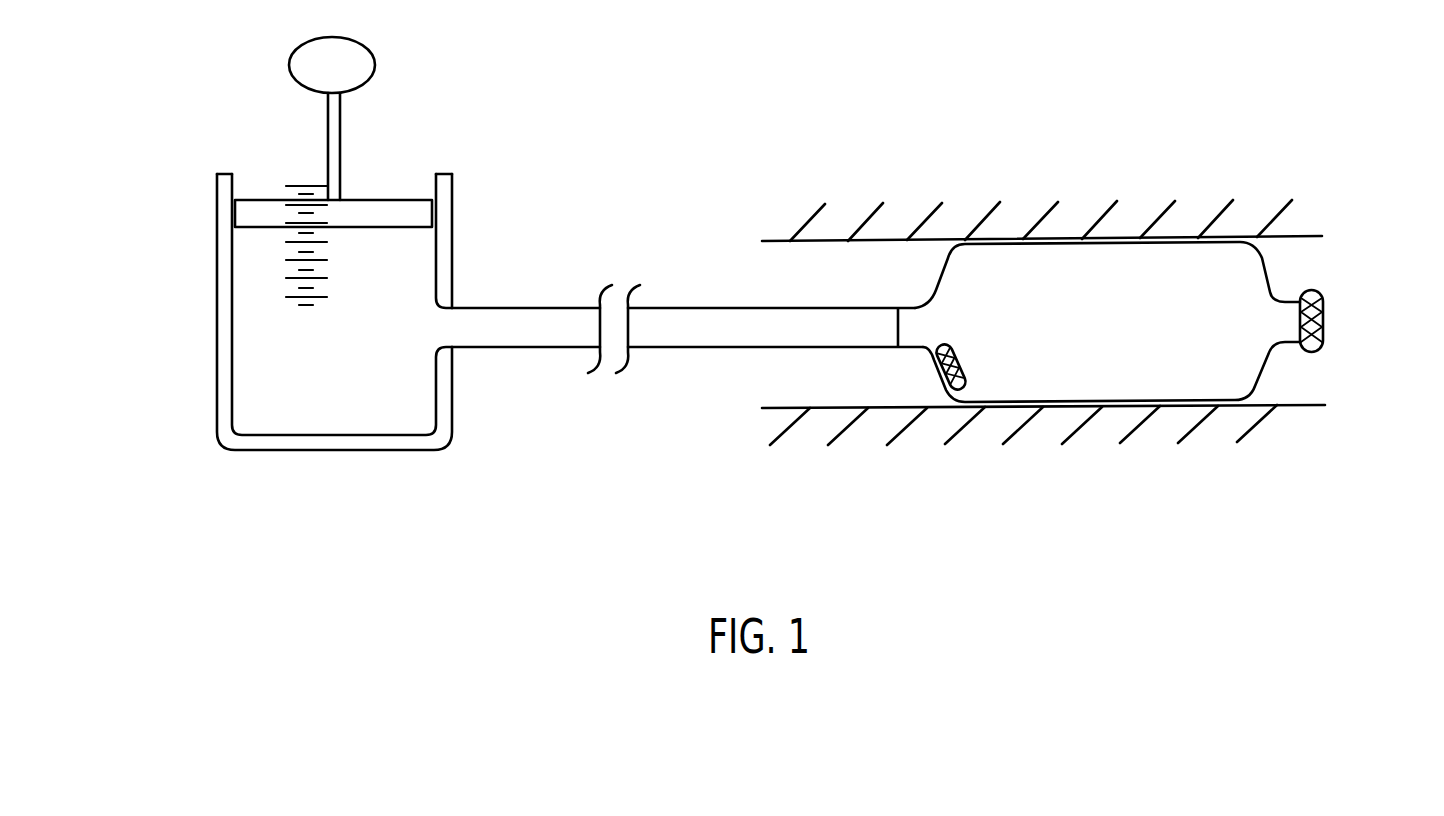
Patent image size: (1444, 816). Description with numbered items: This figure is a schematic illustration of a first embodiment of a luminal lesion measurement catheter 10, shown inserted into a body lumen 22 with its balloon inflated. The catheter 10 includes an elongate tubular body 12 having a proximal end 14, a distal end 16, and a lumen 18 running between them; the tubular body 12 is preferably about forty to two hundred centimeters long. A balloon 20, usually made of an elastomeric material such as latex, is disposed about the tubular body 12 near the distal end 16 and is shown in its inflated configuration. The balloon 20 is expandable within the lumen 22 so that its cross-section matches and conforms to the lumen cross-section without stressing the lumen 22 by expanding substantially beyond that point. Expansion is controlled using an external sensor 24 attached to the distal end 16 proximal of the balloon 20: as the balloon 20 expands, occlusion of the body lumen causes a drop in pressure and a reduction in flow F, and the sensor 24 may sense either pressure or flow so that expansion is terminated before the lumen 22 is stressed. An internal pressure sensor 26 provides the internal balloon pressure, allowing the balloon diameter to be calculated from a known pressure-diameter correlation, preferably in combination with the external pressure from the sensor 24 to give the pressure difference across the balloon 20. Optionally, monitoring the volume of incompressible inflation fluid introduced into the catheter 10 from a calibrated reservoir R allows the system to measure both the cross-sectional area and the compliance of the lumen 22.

The luminal lesion measurement catheter 10 is at (825, 243).
The elongate tubular body 12 is at (684, 350).
The proximal end 14 is at (480, 378).
The distal end 16 is at (1297, 276).
The lumen 18 is at (523, 317).
The balloon 20 is at (1055, 258).
The body lumen 22 is at (1297, 407).
The external sensor 24 is at (1325, 320).
The internal pressure sensor 26 is at (962, 363).
The calibrated reservoir R is at (188, 274).
The flow F is at (860, 266).